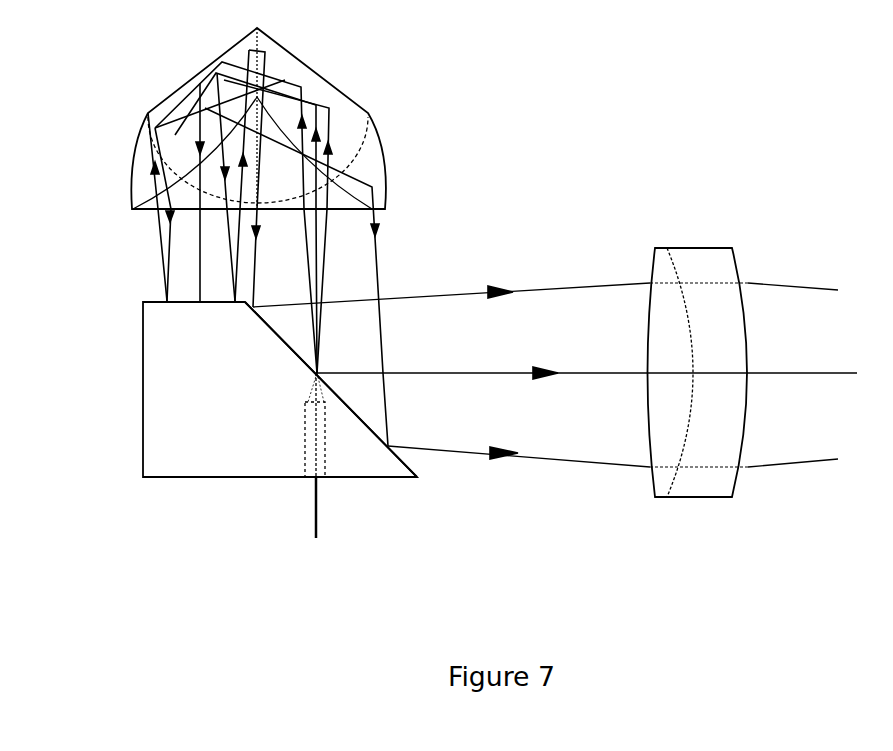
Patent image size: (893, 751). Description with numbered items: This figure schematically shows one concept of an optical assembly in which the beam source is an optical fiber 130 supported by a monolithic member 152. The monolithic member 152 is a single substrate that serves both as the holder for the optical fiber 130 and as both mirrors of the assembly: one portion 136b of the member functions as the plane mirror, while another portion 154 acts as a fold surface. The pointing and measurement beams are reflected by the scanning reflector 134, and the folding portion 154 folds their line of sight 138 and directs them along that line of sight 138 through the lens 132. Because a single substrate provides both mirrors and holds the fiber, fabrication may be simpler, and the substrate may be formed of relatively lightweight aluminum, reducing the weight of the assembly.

The optical fiber 130 is at (320, 385).
The lens 132 is at (722, 260).
The scanning reflector 134 is at (347, 112).
The portion functioning as plane mirror 136b is at (160, 298).
The line of sight 138 is at (199, 250).
The monolithic member 152 is at (280, 389).
The folding portion 154 is at (412, 462).